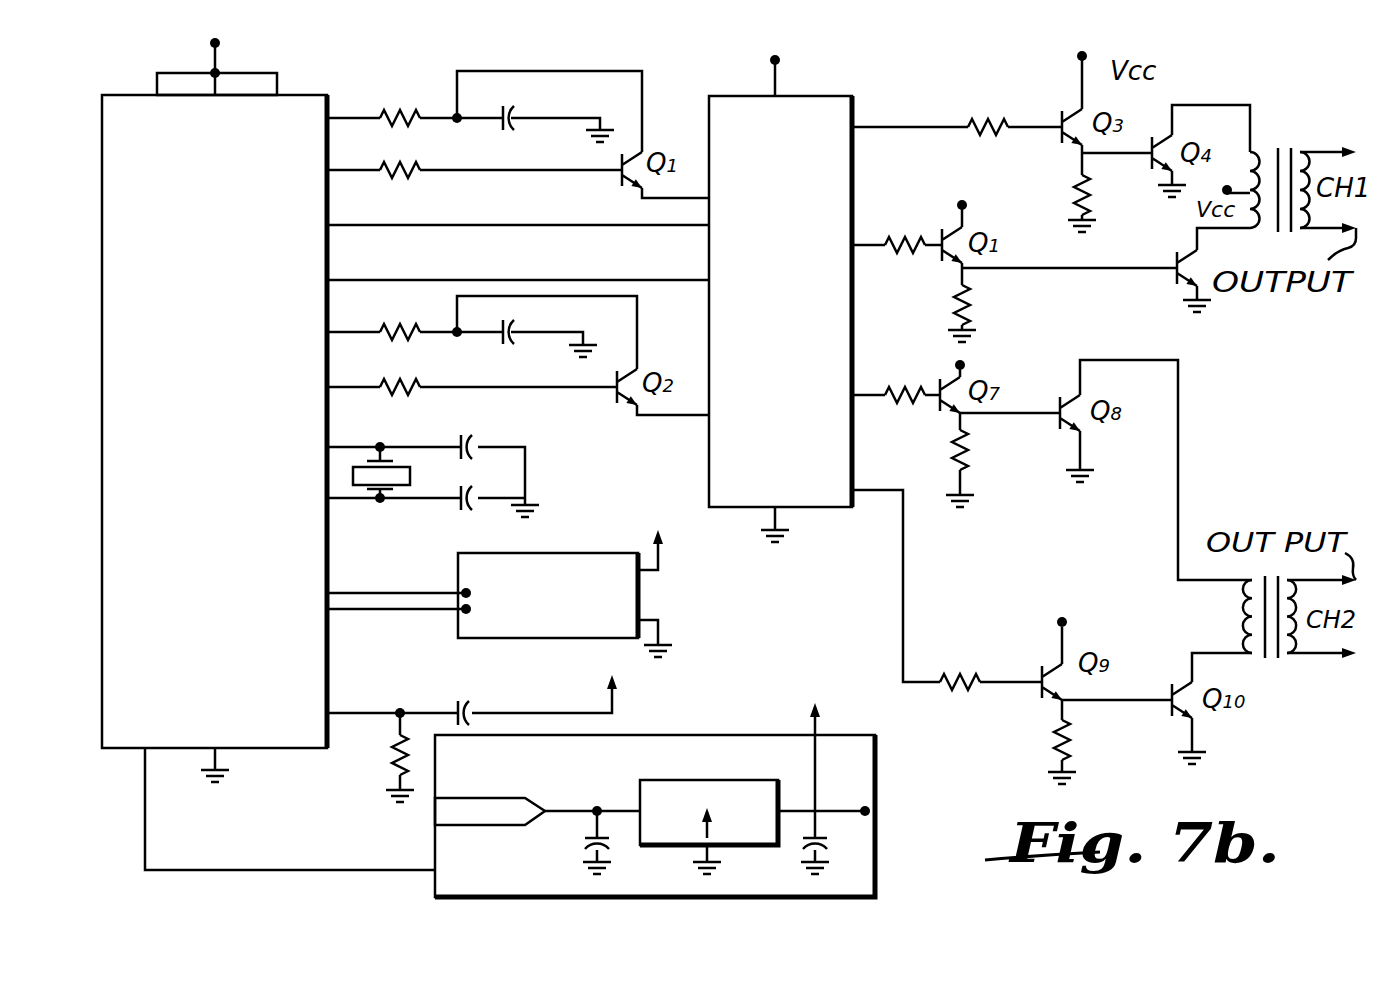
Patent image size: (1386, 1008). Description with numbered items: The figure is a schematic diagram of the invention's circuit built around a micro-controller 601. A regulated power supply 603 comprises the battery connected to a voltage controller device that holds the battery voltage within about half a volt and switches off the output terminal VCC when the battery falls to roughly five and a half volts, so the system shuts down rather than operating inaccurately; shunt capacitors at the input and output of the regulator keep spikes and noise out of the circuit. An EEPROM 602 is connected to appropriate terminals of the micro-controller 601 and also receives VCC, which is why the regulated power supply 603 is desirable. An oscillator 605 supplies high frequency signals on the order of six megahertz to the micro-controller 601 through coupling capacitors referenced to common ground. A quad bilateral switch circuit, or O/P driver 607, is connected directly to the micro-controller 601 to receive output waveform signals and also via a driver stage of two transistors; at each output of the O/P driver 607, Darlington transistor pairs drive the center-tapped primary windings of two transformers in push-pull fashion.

The micro-controller 601 is at (300, 104).
The EEPROM 602 is at (632, 605).
The regulated power supply 603 is at (776, 724).
The oscillator 605 is at (548, 473).
The O/P driver 607 is at (810, 356).